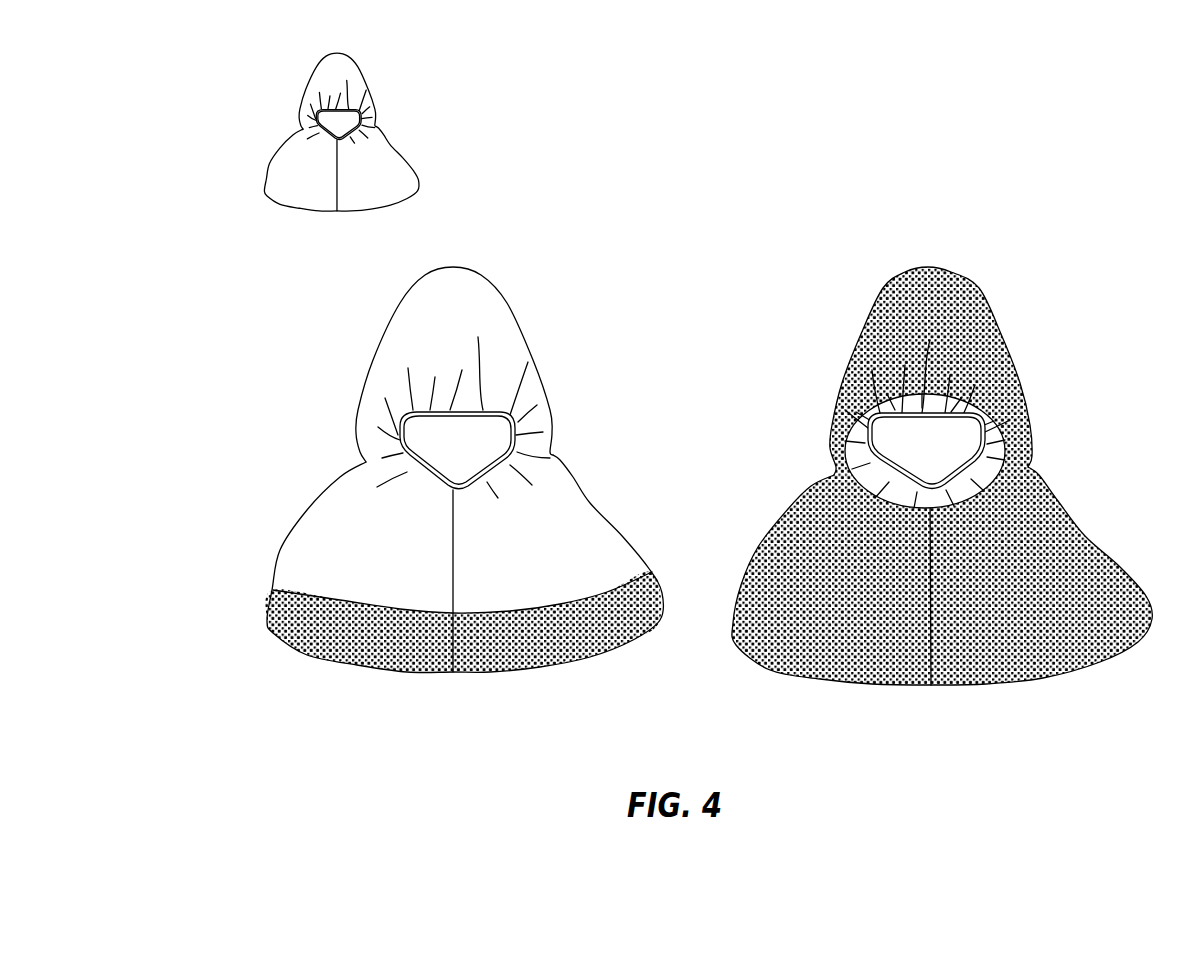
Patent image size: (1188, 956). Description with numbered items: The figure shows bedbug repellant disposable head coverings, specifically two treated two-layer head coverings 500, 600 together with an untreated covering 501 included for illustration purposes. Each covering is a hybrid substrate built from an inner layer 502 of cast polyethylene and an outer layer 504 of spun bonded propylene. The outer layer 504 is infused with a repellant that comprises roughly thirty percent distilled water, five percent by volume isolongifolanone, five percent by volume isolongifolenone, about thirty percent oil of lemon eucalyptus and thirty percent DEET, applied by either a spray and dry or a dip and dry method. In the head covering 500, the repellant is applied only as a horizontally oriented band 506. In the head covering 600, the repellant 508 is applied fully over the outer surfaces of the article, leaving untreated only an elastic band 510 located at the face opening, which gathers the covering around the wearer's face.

The treated two-layer head covering 500 is at (375, 312).
The untreated covering 501 is at (297, 77).
The inner layer 502 is at (298, 118).
The outer layer 504 is at (400, 153).
The horizontally oriented band 506 is at (290, 620).
The repellant 508 is at (1032, 513).
The elastic band 510 is at (851, 433).
The treated two-layer head covering 600 is at (985, 262).